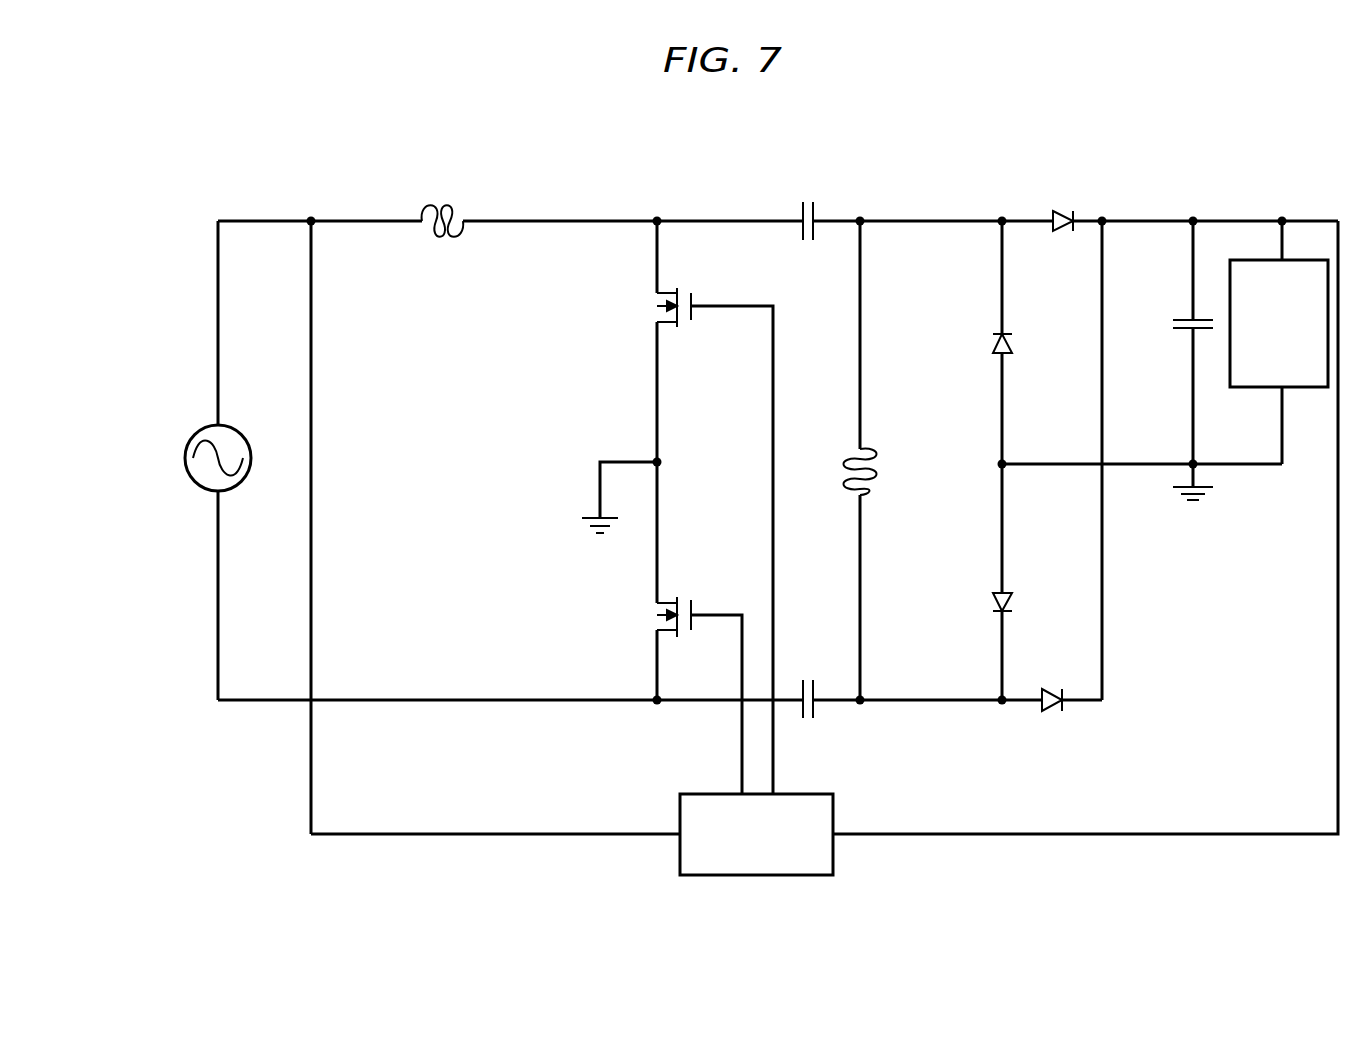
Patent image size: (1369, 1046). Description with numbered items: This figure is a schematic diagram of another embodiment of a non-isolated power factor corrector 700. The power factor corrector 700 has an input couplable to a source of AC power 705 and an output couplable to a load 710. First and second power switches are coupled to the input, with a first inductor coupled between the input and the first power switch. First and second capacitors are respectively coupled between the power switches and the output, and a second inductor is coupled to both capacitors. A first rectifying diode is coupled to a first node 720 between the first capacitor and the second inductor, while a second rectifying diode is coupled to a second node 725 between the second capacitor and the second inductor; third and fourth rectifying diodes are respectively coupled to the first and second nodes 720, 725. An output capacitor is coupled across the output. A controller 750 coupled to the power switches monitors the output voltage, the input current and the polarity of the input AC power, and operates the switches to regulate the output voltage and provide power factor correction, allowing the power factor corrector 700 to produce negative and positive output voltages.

The power factor corrector 700 is at (618, 173).
The source of AC power 705 is at (190, 445).
The load 710 is at (1303, 390).
The first node 720 is at (863, 218).
The second node 725 is at (863, 703).
The controller 750 is at (803, 878).